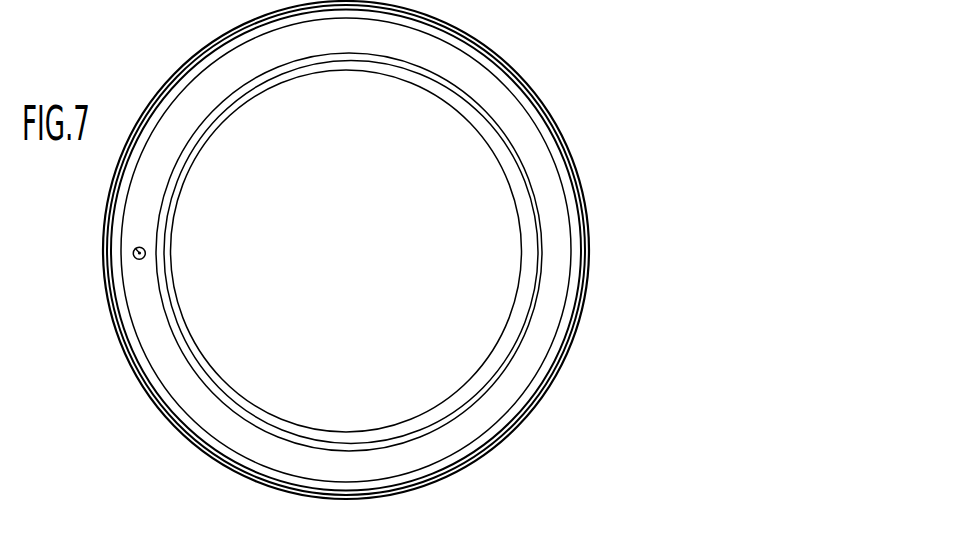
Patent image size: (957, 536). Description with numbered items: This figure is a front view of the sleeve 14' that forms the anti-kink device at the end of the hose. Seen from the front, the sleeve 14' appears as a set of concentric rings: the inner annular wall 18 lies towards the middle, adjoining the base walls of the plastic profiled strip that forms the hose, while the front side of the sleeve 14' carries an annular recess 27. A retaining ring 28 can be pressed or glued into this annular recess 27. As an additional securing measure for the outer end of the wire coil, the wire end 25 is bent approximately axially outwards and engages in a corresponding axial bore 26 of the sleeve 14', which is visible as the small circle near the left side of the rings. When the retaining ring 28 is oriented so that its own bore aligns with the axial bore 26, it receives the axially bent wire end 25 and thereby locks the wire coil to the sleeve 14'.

The sleeve 14' is at (376, 250).
The annular wall 18 is at (192, 165).
The wire end 25 is at (136, 246).
The axial bore 26 is at (141, 260).
The annular recess 27 is at (561, 167).
The retaining ring 28 is at (538, 328).